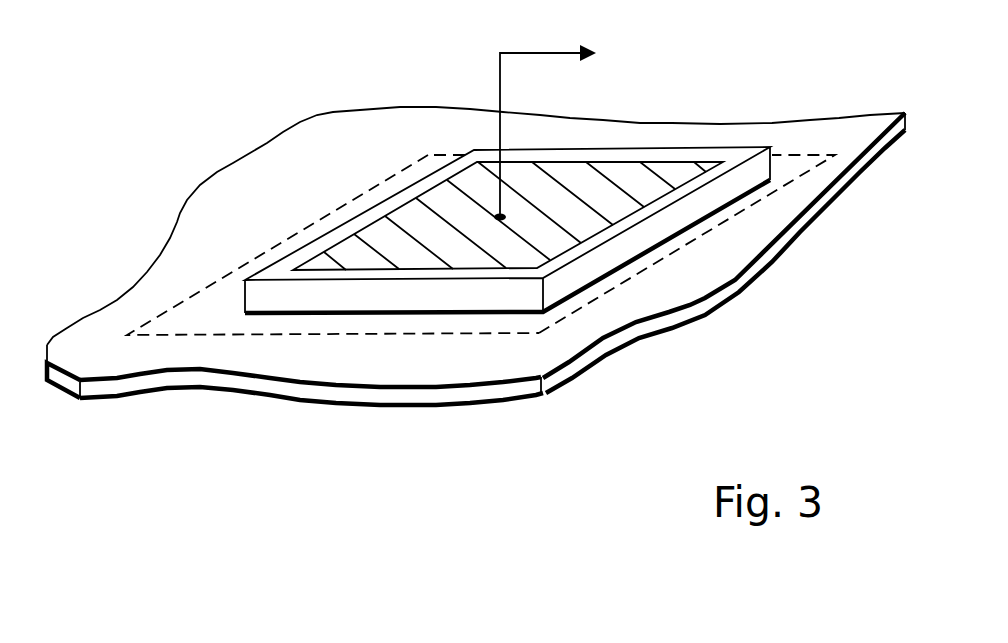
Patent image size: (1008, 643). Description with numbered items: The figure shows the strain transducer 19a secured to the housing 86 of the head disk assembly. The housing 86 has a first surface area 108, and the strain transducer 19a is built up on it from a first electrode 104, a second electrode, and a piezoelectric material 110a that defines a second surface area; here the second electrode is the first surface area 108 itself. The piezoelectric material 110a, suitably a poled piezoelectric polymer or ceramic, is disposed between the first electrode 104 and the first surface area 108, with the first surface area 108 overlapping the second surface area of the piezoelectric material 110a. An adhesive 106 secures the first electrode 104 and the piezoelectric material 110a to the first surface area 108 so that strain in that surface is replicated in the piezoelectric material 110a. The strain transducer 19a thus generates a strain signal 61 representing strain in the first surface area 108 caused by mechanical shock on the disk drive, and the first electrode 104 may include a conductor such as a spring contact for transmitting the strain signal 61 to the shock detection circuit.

The strain transducer 19a is at (189, 94).
The strain signal 61 is at (539, 53).
The housing 86 is at (743, 303).
The first electrode 104 is at (648, 167).
The adhesive 106 is at (394, 313).
The first surface area 108 is at (710, 224).
The piezoelectric material 110a is at (353, 212).